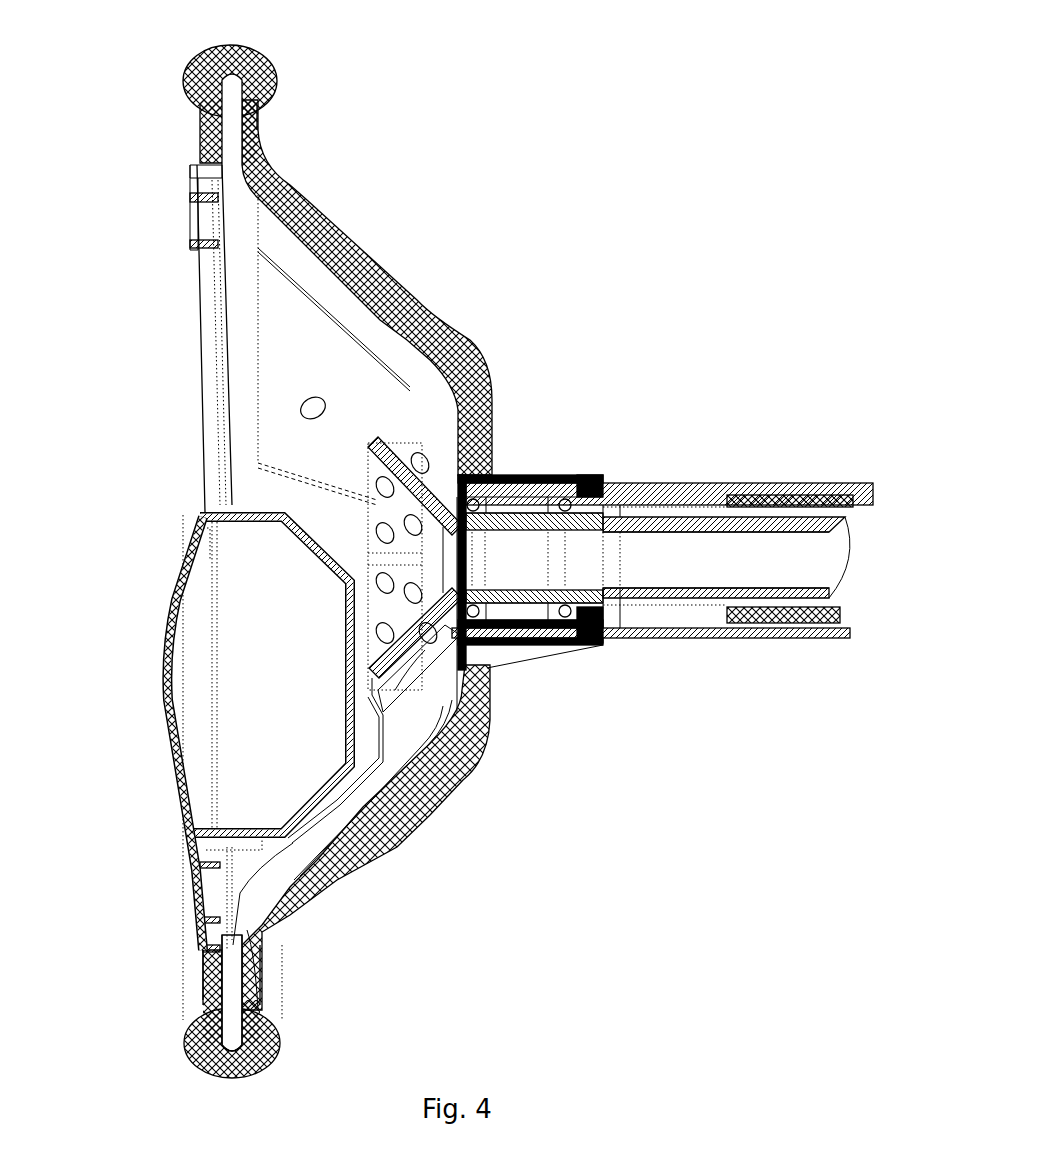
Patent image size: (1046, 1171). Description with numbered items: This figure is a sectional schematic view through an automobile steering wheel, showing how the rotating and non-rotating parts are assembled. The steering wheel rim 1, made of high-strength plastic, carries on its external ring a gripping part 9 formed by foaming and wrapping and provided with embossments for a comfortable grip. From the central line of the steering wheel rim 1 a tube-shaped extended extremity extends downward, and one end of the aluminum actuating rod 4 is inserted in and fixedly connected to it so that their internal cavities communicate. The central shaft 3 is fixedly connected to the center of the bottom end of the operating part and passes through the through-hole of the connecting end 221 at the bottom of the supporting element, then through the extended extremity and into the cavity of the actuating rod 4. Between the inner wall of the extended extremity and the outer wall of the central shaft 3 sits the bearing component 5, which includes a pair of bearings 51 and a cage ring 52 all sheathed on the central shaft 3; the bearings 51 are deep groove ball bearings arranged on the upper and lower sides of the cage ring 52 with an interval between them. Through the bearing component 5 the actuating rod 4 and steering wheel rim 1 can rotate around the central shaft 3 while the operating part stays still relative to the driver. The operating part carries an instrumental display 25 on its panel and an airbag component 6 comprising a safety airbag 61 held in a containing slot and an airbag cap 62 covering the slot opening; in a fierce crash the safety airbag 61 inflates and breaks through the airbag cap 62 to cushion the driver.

The steering wheel rim 1 is at (323, 240).
The gripping part 9 is at (253, 53).
The instrumental display 25 is at (215, 360).
The connecting end 221 is at (397, 453).
The bearing component 5 is at (550, 513).
The bearings 51 is at (518, 508).
The cage ring 52 is at (522, 475).
The actuating rod 4 is at (667, 482).
The central shaft 3 is at (717, 517).
The airbag component 6 is at (189, 733).
The safety airbag 61 is at (320, 795).
The airbag cap 62 is at (175, 765).